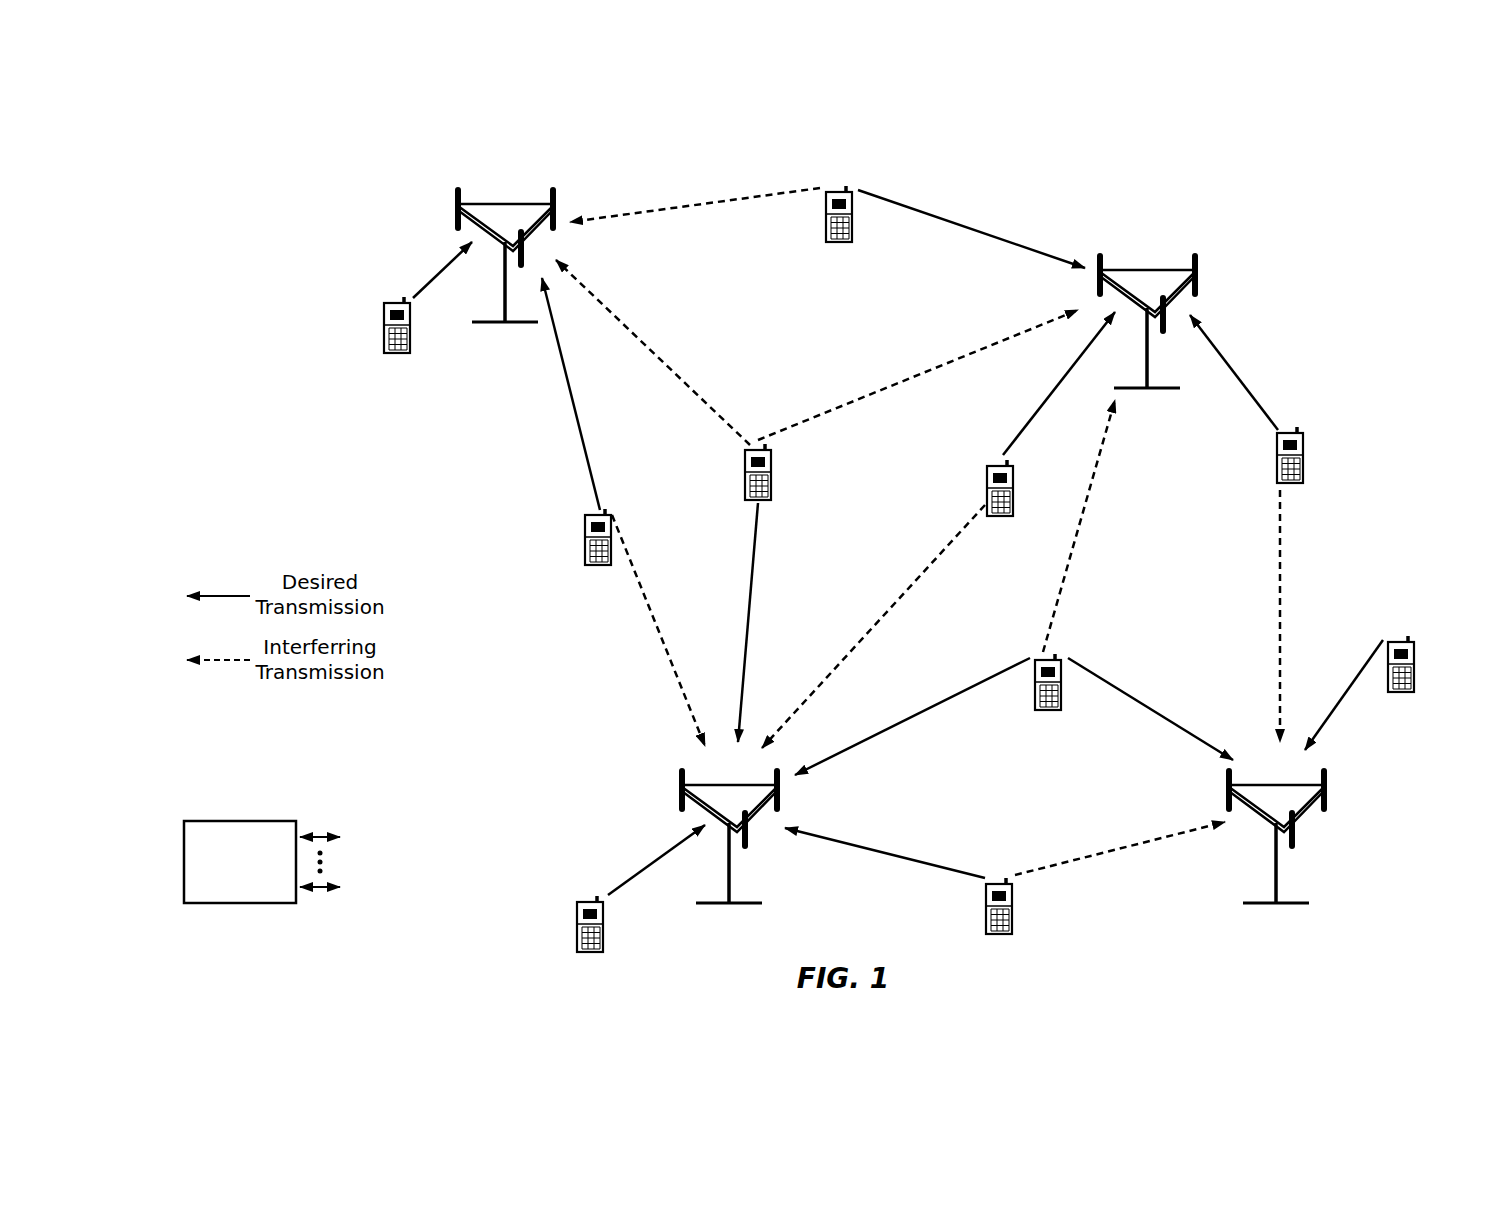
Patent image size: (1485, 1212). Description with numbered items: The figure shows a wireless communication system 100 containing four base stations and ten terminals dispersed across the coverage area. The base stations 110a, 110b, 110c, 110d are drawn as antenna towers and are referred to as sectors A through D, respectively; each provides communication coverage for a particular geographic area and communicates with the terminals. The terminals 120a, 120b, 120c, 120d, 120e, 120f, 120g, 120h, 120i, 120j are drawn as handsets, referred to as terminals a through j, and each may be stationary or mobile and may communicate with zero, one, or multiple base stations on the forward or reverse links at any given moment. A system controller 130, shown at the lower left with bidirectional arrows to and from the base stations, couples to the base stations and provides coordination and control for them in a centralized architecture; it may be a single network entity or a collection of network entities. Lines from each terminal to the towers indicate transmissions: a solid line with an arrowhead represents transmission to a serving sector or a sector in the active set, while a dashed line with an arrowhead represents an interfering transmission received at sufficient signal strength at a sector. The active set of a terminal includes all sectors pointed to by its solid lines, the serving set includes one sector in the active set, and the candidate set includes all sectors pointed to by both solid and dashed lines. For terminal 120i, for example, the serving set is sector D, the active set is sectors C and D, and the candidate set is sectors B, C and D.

The wireless communication system 100 is at (1314, 199).
The base station 110a is at (504, 204).
The base station 110b is at (1146, 270).
The base station 110c is at (728, 785).
The base station 110d is at (1274, 785).
The terminal 120a is at (585, 541).
The terminal 120b is at (395, 303).
The terminal 120c is at (840, 192).
The terminal 120d is at (745, 478).
The terminal 120e is at (1013, 496).
The terminal 120f is at (1293, 433).
The terminal 120g is at (590, 902).
The terminal 120h is at (986, 912).
The terminal 120i is at (1035, 700).
The terminal 120j is at (1405, 643).
The system controller 130 is at (238, 821).